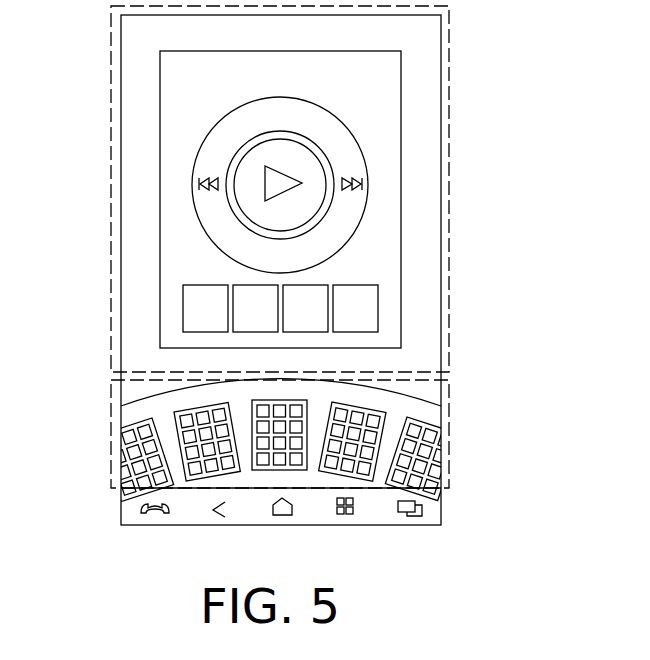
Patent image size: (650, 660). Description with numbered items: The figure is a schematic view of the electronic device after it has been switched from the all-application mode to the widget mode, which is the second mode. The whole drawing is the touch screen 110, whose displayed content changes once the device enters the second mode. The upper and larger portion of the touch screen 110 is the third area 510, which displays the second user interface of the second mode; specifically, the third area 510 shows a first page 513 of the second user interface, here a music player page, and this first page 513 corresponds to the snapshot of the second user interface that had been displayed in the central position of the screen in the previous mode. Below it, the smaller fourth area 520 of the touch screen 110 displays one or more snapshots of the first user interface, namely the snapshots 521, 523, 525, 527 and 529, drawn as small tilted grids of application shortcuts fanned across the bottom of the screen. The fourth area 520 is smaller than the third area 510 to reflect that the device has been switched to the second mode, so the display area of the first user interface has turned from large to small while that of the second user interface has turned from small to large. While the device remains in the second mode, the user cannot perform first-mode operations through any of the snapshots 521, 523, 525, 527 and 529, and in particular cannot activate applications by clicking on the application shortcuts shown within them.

The touch screen 110 is at (127, 510).
The third area 510 is at (449, 93).
The first page 513 is at (175, 119).
The fourth area 520 is at (449, 423).
The snapshot 521 is at (168, 485).
The snapshot 523 is at (225, 473).
The snapshot 525 is at (290, 470).
The snapshot 527 is at (358, 473).
The snapshot 529 is at (427, 483).